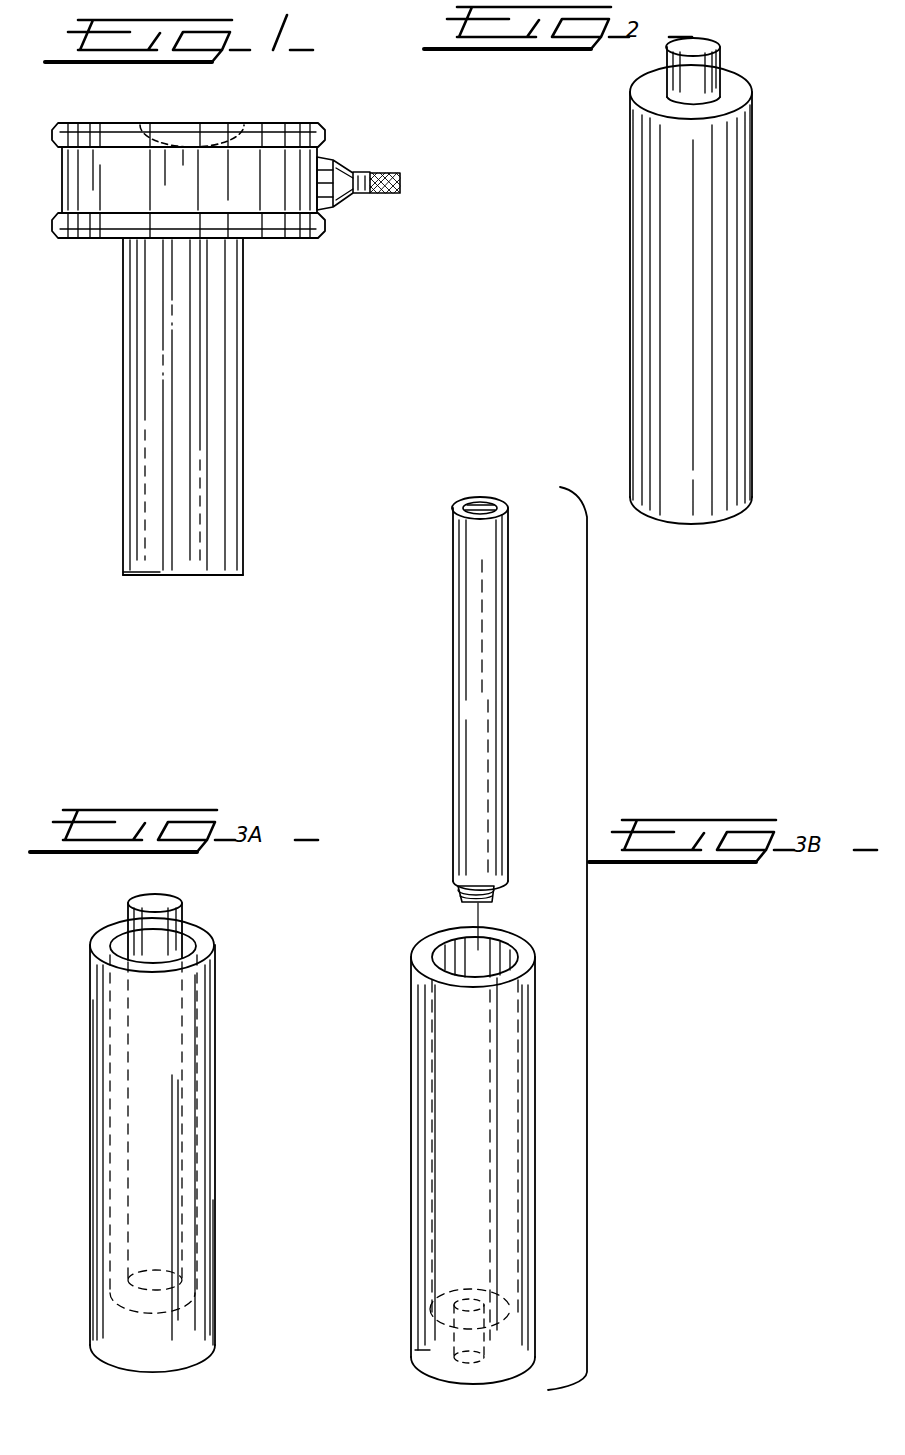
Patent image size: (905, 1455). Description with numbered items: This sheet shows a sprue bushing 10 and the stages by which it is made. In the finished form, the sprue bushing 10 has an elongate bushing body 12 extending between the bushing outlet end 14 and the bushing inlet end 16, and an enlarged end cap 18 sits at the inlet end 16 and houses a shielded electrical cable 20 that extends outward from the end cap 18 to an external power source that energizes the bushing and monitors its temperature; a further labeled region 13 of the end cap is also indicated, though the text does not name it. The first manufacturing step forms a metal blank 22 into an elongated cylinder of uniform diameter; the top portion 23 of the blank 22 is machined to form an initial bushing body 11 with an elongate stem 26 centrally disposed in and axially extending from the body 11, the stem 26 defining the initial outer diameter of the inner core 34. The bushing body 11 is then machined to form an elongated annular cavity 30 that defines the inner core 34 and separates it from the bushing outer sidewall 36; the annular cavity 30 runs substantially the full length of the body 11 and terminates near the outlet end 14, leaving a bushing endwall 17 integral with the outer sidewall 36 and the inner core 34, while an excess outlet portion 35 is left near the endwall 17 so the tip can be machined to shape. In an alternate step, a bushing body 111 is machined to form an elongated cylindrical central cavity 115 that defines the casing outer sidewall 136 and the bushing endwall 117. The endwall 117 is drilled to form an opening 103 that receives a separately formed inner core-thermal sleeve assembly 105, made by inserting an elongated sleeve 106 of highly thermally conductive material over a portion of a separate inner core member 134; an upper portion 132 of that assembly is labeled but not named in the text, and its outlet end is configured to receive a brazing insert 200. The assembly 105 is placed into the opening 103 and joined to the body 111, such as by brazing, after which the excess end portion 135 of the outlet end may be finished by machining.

In FIG. 1, the sprue bushing 10 is at (123, 322).
In FIG. 2, the bushing body 11 is at (632, 202).
In FIG. 3A, the bushing body 11 is at (88, 998).
In FIG. 1, the bushing body 12 is at (243, 370).
In FIG. 1, the head body 13 is at (183, 153).
In FIG. 1, the bushing outlet end 14 is at (133, 577).
In FIG. 1, the bushing inlet end 16 is at (143, 126).
In FIG. 1, the bushing endwall 17 is at (225, 577).
In FIG. 3A, the bushing endwall 17 is at (108, 1355).
In FIG. 1, the end cap 18 is at (330, 126).
In FIG. 1, the shielded electrical cable 20 is at (385, 167).
In FIG. 2, the metal blank 22 is at (630, 290).
In FIG. 2, the top portion 23 is at (740, 88).
In FIG. 2, the stem 26 is at (722, 70).
In FIG. 3A, the annular cavity 30 is at (182, 930).
In FIG. 3A, the inner core 34 is at (160, 1083).
In FIG. 3A, the excess bushing body end portion 35 is at (206, 1330).
In FIG. 3A, the bushing outer sidewall 36 is at (92, 1152).
In FIG. 3B, the opening 103 is at (440, 1381).
In FIG. 3B, the inner core-thermal sleeve assembly 105 is at (453, 665).
In FIG. 3B, the elongated sleeve 106 is at (455, 770).
In FIG. 3B, the bushing body 111 is at (411, 1051).
In FIG. 3B, the central cavity 115 is at (450, 950).
In FIG. 3B, the bushing endwall 117 is at (411, 1352).
In FIG. 3B, the rod upper portion 132 is at (455, 574).
In FIG. 3B, the inner core member 134 is at (478, 502).
In FIG. 3B, the excess end portion 135 is at (535, 1355).
In FIG. 3B, the bushing casing outer sidewall 136 is at (411, 1144).
In FIG. 3B, the brazing insert 200 is at (458, 892).